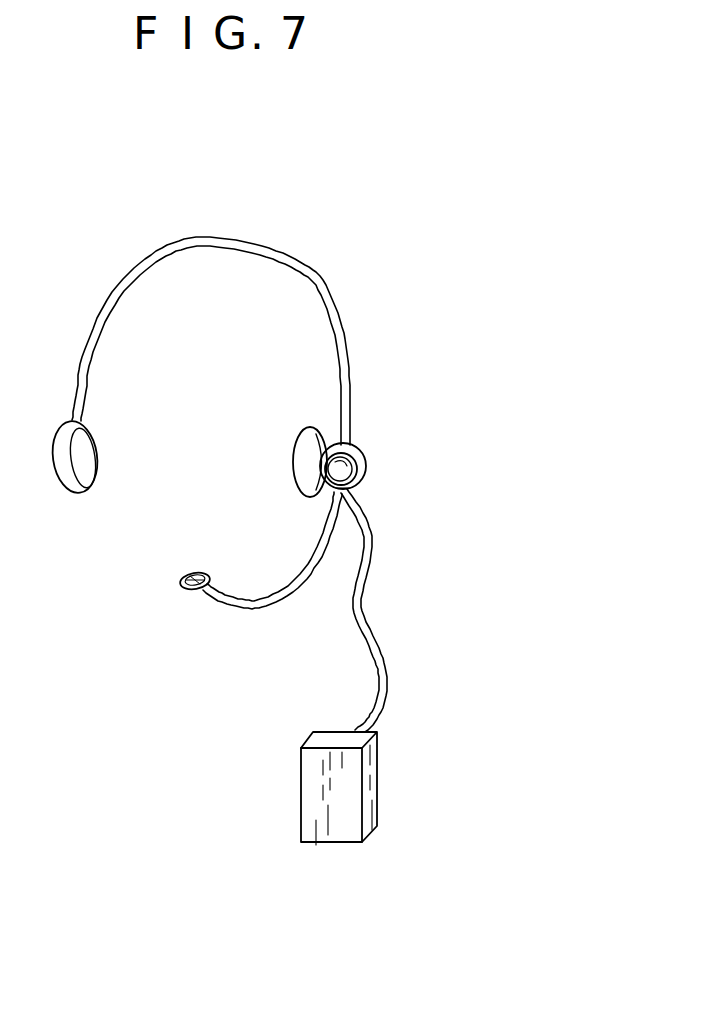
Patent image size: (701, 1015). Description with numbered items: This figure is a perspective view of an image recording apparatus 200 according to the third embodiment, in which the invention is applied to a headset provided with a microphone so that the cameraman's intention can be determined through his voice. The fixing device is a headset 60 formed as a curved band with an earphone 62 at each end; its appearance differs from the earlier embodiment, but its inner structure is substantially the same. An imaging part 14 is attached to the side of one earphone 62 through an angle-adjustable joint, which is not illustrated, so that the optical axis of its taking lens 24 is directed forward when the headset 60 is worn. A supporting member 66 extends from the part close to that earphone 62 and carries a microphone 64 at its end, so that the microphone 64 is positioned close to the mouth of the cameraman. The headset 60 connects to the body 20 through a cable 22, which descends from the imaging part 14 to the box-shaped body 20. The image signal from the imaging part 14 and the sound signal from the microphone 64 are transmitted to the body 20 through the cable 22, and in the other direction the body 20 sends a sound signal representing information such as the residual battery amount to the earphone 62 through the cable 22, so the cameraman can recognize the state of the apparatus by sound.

The image recording apparatus 200 is at (420, 309).
The headset 60 is at (324, 278).
The earphone 62 is at (303, 477).
The imaging part 14 is at (358, 447).
The taking lens 24 is at (347, 492).
The supporting member 66 is at (270, 607).
The microphone 64 is at (183, 577).
The cable 22 is at (385, 656).
The body 20 is at (348, 793).